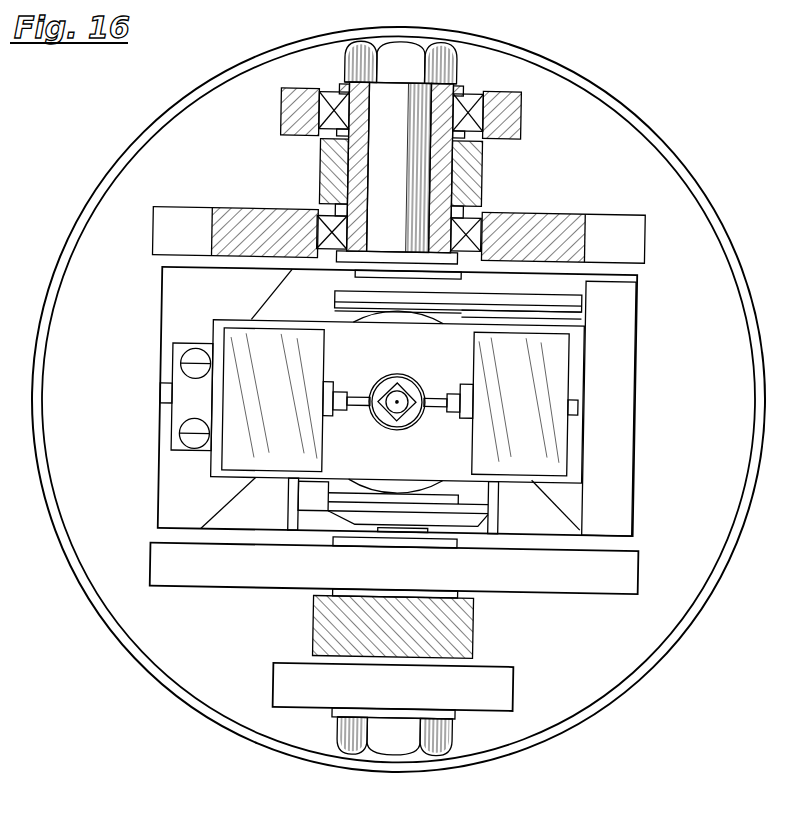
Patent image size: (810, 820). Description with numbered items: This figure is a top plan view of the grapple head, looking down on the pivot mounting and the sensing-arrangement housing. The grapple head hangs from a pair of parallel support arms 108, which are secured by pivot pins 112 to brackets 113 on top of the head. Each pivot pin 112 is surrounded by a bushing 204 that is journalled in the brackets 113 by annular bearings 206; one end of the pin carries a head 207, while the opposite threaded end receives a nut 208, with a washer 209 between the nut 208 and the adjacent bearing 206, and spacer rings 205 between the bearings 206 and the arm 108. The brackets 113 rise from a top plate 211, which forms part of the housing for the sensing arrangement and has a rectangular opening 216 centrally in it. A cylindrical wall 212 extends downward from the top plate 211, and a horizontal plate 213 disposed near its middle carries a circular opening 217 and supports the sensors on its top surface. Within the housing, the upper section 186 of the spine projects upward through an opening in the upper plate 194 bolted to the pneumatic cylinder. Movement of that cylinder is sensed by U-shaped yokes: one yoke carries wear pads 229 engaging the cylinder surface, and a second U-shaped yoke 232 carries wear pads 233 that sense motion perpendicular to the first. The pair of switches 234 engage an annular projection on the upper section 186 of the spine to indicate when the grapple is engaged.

The support arms 108 is at (340, 175).
The pivot pins 112 is at (423, 107).
The brackets 113 is at (562, 213).
The upper section of the spine 186 is at (430, 318).
The upper plate 194 is at (447, 352).
The bushing 204 is at (478, 98).
The spacer rings 205 is at (480, 143).
The annular bearings 206 is at (320, 120).
The head 207 is at (395, 258).
The nut 208 is at (440, 58).
The washer 209 is at (352, 86).
The top plate 211 is at (647, 155).
The cylindrical wall 212 is at (580, 82).
The horizontal plate 213 is at (625, 410).
The rectangular opening 216 is at (162, 297).
The circular opening 217 is at (275, 317).
The wear pads 229 is at (290, 495).
The U-shaped yoke 232 is at (352, 288).
The wear pads 233 is at (353, 312).
The switches 234 is at (453, 403).